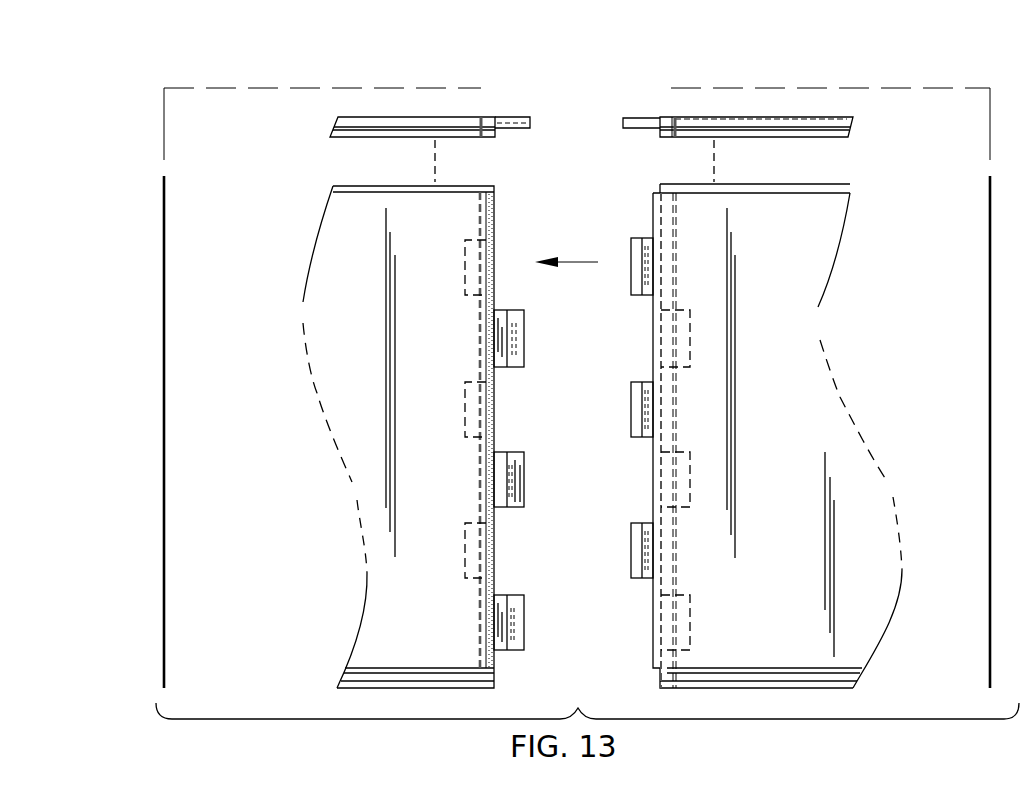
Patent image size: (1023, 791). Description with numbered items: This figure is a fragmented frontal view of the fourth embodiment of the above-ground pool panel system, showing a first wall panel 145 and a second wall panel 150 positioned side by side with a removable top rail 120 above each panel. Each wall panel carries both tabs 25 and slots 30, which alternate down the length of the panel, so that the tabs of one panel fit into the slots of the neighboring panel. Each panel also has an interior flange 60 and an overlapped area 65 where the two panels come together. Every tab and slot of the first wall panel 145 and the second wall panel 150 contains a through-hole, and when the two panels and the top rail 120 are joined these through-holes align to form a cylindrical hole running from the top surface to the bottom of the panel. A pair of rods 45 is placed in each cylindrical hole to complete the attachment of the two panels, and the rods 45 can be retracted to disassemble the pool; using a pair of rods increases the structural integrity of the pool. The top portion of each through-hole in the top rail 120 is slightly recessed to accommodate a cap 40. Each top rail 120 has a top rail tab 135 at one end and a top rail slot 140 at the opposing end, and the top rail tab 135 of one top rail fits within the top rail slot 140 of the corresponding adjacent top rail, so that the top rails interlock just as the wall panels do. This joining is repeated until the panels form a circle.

The tab 25 is at (525, 338).
The slot 30 is at (435, 429).
The cap 40 is at (481, 117).
The rod 45 is at (165, 280).
The interior flange 60 is at (653, 490).
The overlapped area 65 is at (492, 405).
The top rail 120 is at (427, 118).
The top rail tab 135 is at (630, 118).
The top rail slot 140 is at (513, 118).
The first wall panel 145 is at (338, 416).
The second wall panel 150 is at (813, 380).